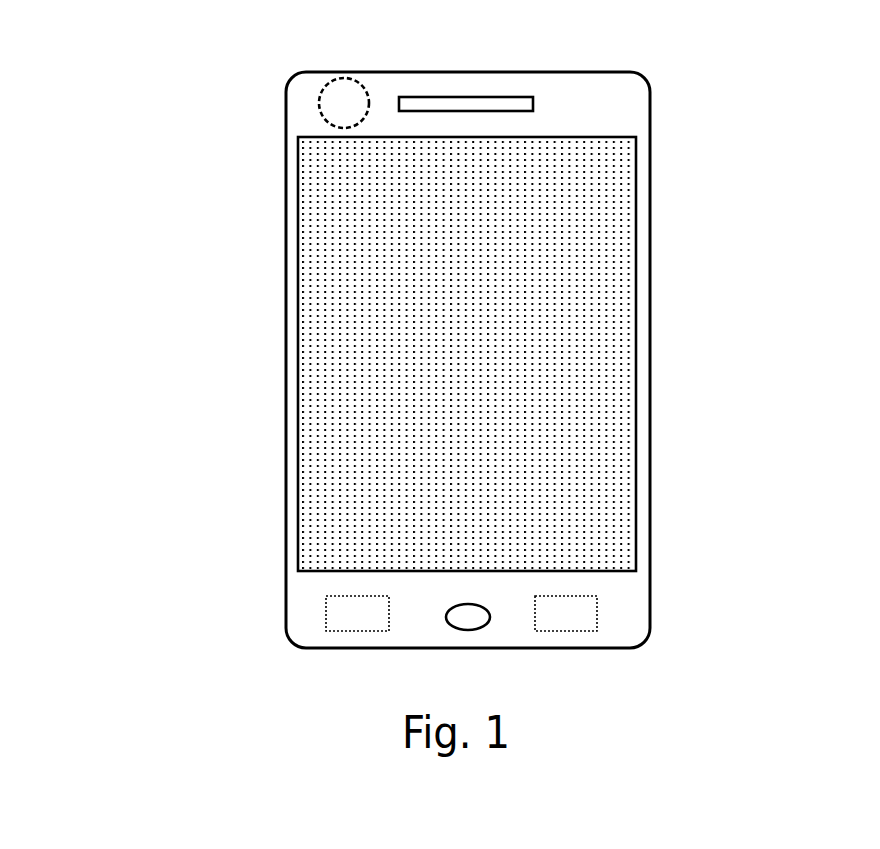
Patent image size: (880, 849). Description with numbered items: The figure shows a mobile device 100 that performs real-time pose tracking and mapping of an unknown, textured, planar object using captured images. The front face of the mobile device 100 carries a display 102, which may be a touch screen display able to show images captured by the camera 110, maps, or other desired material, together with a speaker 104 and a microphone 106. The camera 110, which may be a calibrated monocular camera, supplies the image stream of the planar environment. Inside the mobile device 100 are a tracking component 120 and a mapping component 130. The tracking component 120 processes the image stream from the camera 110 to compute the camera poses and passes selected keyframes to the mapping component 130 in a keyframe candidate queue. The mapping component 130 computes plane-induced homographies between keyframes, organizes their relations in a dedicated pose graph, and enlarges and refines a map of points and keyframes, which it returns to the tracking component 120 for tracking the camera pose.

The mobile device 100 is at (170, 122).
The display 102 is at (637, 178).
The speaker 104 is at (443, 96).
The microphone 106 is at (446, 620).
The camera 110 is at (320, 101).
The tracking component 120 is at (378, 397).
The mapping component 130 is at (597, 613).